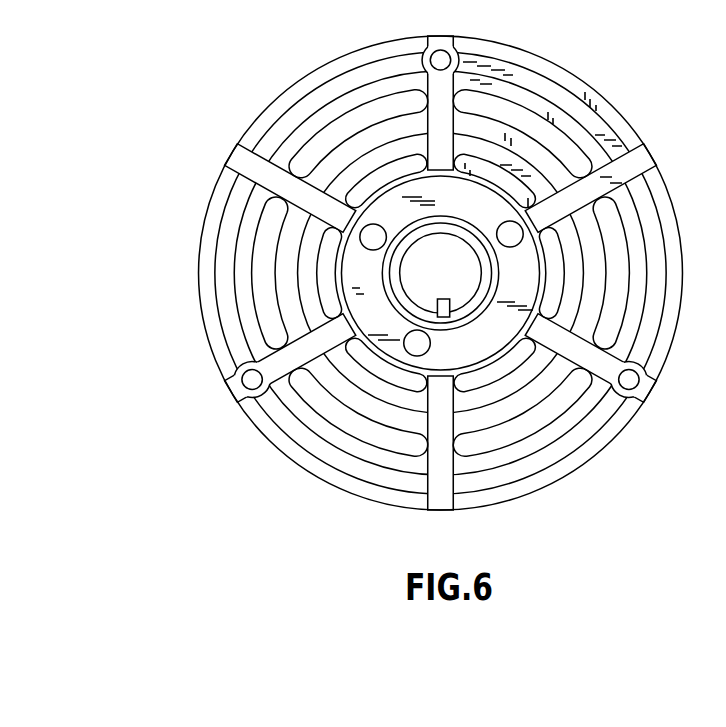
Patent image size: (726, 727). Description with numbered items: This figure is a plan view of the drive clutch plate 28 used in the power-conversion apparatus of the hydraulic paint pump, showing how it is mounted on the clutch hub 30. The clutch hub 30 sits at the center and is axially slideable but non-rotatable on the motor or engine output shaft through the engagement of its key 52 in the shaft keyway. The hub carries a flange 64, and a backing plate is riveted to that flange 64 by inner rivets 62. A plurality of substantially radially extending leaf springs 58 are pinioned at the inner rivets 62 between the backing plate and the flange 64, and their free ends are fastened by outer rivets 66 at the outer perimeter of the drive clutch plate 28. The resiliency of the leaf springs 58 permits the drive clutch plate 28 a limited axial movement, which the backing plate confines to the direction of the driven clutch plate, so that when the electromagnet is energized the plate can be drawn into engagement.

The drive clutch plate 28 is at (256, 130).
The clutch hub 30 is at (472, 294).
The key 52 is at (442, 299).
The leaf springs 58 is at (412, 96).
The inner rivets 62 is at (497, 224).
The flange 64 is at (510, 328).
The outer rivets 66 is at (438, 50).